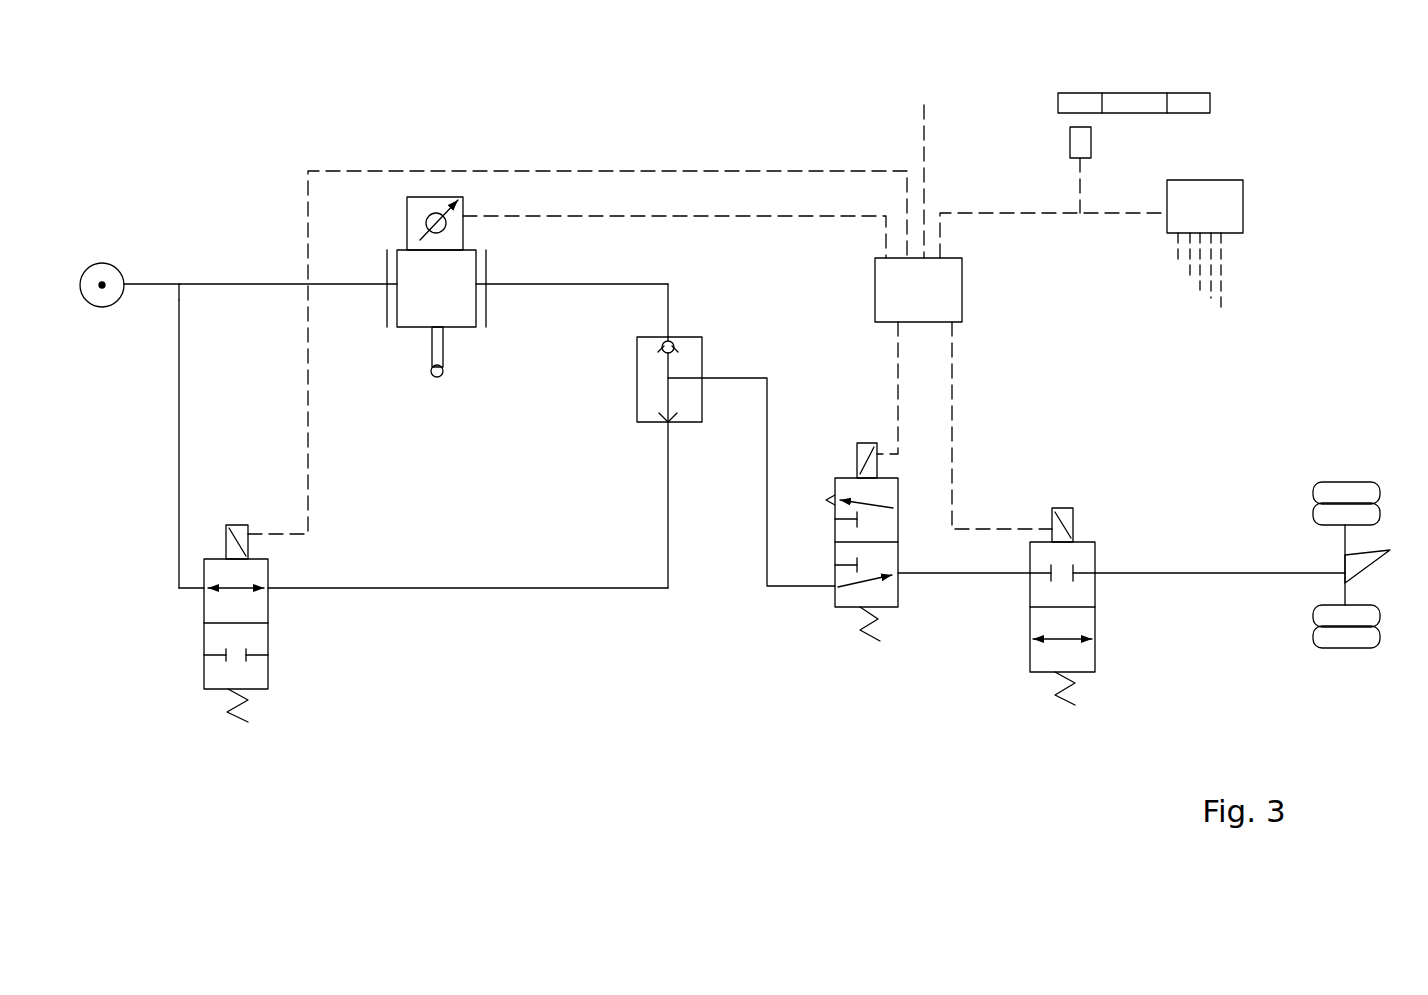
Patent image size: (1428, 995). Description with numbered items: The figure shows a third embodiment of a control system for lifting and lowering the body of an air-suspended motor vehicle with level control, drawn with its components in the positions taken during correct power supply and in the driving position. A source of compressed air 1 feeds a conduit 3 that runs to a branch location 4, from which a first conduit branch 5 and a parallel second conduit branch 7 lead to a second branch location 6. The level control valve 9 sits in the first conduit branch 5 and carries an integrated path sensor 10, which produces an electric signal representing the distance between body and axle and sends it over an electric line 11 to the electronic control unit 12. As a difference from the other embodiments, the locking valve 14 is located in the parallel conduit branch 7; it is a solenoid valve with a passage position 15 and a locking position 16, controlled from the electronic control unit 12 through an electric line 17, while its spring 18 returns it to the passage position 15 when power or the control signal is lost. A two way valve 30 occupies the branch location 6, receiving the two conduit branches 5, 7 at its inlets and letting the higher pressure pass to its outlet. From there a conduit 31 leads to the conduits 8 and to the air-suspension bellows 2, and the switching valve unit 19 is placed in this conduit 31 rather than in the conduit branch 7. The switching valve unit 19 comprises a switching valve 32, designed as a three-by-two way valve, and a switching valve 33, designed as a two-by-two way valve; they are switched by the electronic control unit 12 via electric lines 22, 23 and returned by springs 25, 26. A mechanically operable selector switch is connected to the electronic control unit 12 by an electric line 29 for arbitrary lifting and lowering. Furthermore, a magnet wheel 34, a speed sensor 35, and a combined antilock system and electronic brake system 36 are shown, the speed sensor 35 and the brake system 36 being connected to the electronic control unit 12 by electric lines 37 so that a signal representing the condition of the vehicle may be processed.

The source of compressed air 1 is at (102, 285).
The air-suspension bellows 2 is at (1368, 495).
The conduit 3 is at (135, 284).
The branch location 4 is at (179, 288).
The first conduit branch 5 is at (218, 284).
The second branch location 6 is at (668, 378).
The second conduit branch 7 is at (179, 422).
The conduits 8 is at (1390, 550).
The level control valve 9 is at (418, 237).
The path sensor 10 is at (434, 197).
The electric line 11 is at (775, 216).
The electronic control unit 12 is at (943, 285).
The locking valve 14 is at (200, 625).
The passage position 15 is at (215, 573).
The locking position 16 is at (258, 637).
The electric line 17 is at (705, 171).
The spring 18 is at (240, 718).
The switching valve unit 19 is at (917, 643).
The electric line 22 is at (898, 407).
The electric line 23 is at (952, 395).
The spring 25 is at (864, 632).
The spring 26 is at (1060, 700).
The electric line 29 is at (925, 143).
The two way valve 30 is at (708, 322).
The conduit 31 is at (1205, 573).
The switching valve 32 is at (1112, 552).
The switching valve 33 is at (809, 556).
The magnet wheel 34 is at (1190, 105).
The speed sensor 35 is at (1091, 143).
The antilock system and electronic brake system 36 is at (1222, 208).
The electric lines 37 is at (1052, 215).